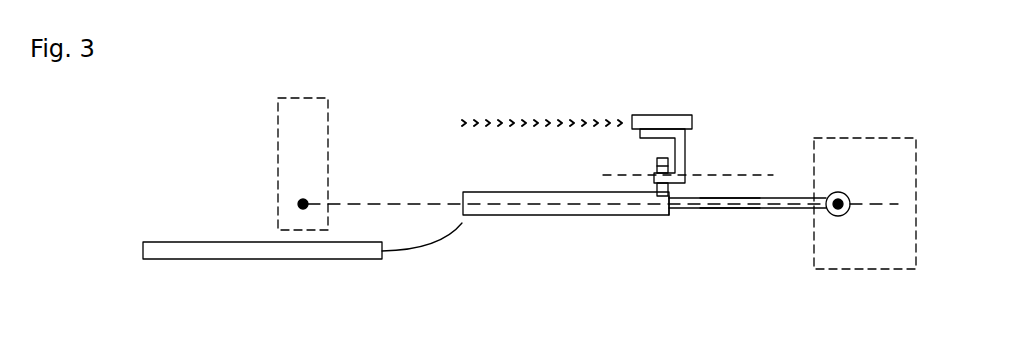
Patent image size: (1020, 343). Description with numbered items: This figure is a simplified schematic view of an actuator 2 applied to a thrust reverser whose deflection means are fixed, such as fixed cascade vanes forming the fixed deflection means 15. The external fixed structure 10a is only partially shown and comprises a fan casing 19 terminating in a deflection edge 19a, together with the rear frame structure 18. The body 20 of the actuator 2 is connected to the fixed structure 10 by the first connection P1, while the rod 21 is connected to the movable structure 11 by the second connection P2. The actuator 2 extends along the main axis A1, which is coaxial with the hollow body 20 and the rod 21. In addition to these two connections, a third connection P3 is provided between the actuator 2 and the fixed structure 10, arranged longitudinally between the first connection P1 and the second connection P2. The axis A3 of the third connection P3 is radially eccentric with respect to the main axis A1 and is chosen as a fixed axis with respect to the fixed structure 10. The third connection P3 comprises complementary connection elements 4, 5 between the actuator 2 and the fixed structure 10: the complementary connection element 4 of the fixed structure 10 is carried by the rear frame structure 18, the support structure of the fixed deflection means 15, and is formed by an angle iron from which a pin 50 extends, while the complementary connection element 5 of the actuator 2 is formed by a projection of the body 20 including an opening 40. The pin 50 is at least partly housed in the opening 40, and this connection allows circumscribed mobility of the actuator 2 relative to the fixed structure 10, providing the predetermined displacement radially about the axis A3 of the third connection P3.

The actuator 2 is at (764, 229).
The complementary connection element 4 is at (636, 194).
The complementary connection element 5 is at (704, 148).
The fixed structure 10 is at (317, 162).
The external fixed structure 10a is at (171, 212).
The movable structure 11 is at (899, 189).
The fixed deflection means 15 is at (510, 100).
The rear frame structure 18 is at (660, 115).
The fan casing 19 is at (230, 242).
The deflection edge 19a is at (430, 245).
The body 20 is at (547, 228).
The rod 21 is at (799, 217).
The opening 40 is at (670, 196).
The pin 50 is at (654, 192).
The main axis A1 is at (380, 203).
The axis of the third connection A3 is at (768, 175).
The first connection P1 is at (298, 200).
The second connection P2 is at (839, 200).
The third connection P3 is at (620, 144).